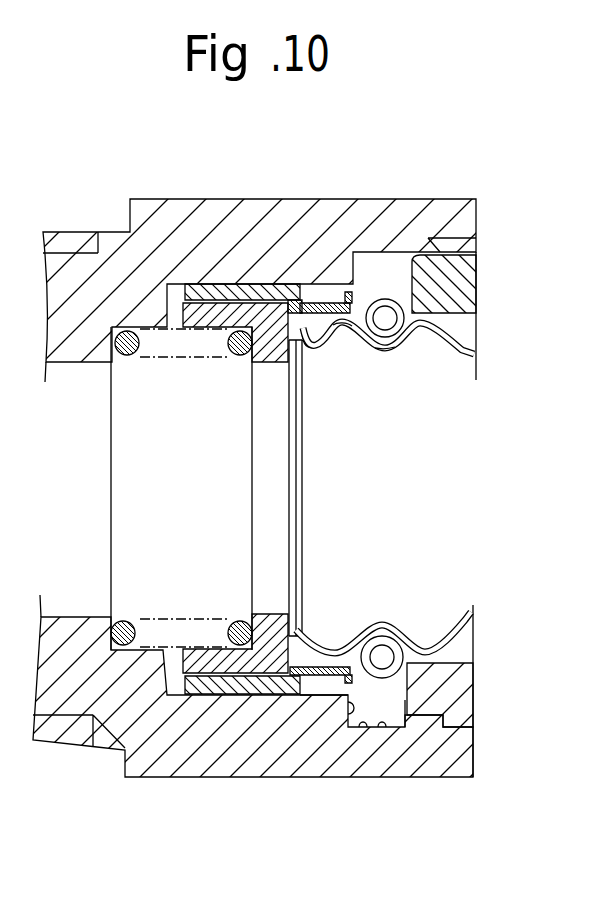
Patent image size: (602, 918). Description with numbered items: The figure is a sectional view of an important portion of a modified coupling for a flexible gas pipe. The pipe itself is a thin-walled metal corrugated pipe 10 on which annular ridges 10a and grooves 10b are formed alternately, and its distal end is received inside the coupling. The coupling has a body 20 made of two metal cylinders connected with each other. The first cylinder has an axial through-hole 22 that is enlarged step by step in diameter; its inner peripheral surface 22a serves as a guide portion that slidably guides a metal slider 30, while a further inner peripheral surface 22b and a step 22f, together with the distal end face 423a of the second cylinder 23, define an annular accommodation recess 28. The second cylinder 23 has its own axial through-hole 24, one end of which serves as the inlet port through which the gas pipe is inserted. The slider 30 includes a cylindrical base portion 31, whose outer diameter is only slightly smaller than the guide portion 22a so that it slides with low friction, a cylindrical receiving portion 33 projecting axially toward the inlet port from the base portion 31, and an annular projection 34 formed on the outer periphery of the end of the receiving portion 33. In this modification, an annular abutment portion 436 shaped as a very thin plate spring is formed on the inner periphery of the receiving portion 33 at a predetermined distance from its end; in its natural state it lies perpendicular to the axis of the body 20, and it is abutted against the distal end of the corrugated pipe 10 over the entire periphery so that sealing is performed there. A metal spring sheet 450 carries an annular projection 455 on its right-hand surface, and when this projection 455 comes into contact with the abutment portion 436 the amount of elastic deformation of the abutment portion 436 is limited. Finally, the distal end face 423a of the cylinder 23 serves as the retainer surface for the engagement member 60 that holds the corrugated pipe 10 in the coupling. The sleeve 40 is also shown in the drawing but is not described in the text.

The corrugated pipe 10 is at (473, 337).
The annular ridges 10a is at (430, 316).
The grooves 10b is at (401, 345).
The body 20 is at (165, 190).
The through-hole 22 is at (84, 610).
The inner peripheral surface 22a is at (308, 688).
The inner peripheral surface 22b is at (364, 728).
The step 22f is at (312, 690).
The second cylinder 23 is at (458, 706).
The through-hole 24 is at (459, 657).
The annular accommodation recess 28 is at (383, 728).
The slider 30 is at (252, 282).
The base portion 31 is at (294, 298).
The receiving portion 33 is at (320, 302).
The annular projection 34 is at (349, 291).
The sleeve 40 is at (124, 330).
The engagement member 60 is at (389, 299).
The distal end face 423a is at (404, 708).
The annular abutment portion 436 is at (328, 333).
The spring sheet 450 is at (215, 292).
The annular projection 455 is at (309, 348).